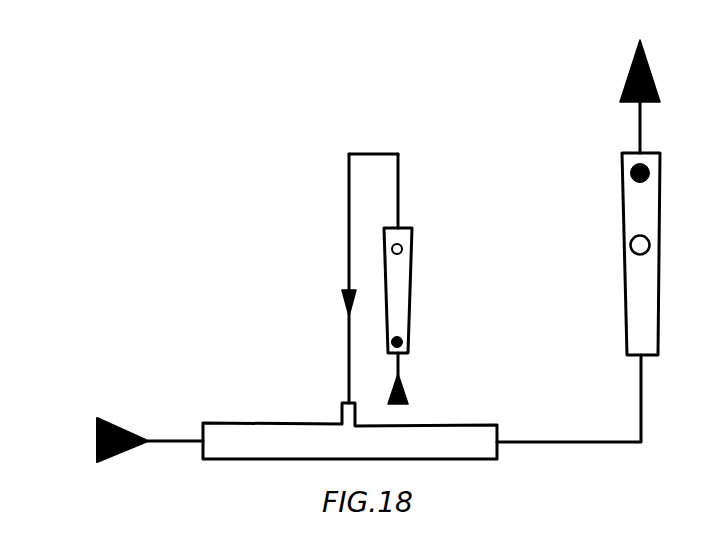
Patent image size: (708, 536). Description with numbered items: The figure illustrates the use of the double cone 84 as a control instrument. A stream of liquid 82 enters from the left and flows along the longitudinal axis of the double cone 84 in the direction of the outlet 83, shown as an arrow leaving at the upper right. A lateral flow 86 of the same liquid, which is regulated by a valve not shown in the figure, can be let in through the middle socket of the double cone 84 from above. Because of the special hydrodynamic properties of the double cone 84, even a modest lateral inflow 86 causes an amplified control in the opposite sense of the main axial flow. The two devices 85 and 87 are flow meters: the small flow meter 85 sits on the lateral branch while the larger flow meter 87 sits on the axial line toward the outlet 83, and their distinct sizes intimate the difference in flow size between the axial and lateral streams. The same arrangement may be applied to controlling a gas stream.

The stream of liquid 82 is at (95, 440).
The outlet 83 is at (637, 55).
The double cone 84 is at (352, 445).
The flow meter 85 is at (395, 308).
The lateral flow 86 is at (347, 338).
The flow meter 87 is at (634, 332).